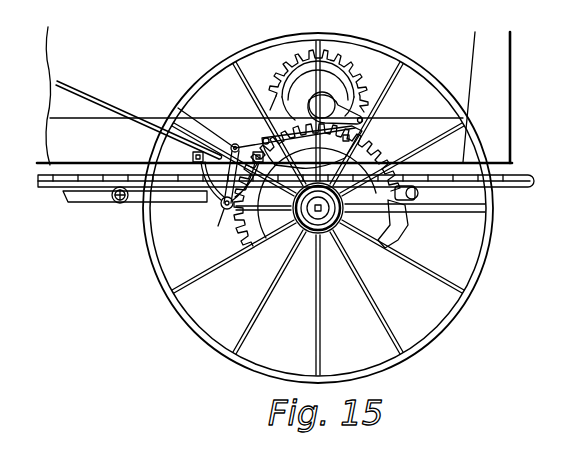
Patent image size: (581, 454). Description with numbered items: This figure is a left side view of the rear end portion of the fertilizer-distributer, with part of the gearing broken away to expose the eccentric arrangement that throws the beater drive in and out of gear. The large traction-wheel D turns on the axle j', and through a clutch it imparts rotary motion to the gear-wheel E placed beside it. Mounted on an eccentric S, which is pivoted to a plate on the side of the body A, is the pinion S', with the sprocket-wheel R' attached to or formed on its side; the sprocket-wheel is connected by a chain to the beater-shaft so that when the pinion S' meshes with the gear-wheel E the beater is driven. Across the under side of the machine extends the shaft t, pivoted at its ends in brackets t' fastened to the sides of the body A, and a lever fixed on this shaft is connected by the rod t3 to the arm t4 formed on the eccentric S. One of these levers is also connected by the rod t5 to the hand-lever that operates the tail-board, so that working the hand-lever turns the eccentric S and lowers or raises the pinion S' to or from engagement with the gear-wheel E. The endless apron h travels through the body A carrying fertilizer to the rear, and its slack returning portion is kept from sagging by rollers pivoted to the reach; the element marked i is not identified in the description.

The body A is at (112, 73).
The rod t5 is at (139, 106).
The frame plate a is at (274, 96).
The bracket t' is at (216, 176).
The shaft t is at (217, 227).
The rod t3 is at (312, 147).
The arm t4 is at (335, 124).
The eccentric S is at (322, 105).
The sprocket-wheel R' is at (309, 81).
The pinion S' is at (325, 83).
The traction-wheel D is at (488, 338).
The axle j' is at (314, 210).
The gear-wheel E is at (404, 236).
The endless apron h is at (62, 187).
The bar i is at (93, 201).